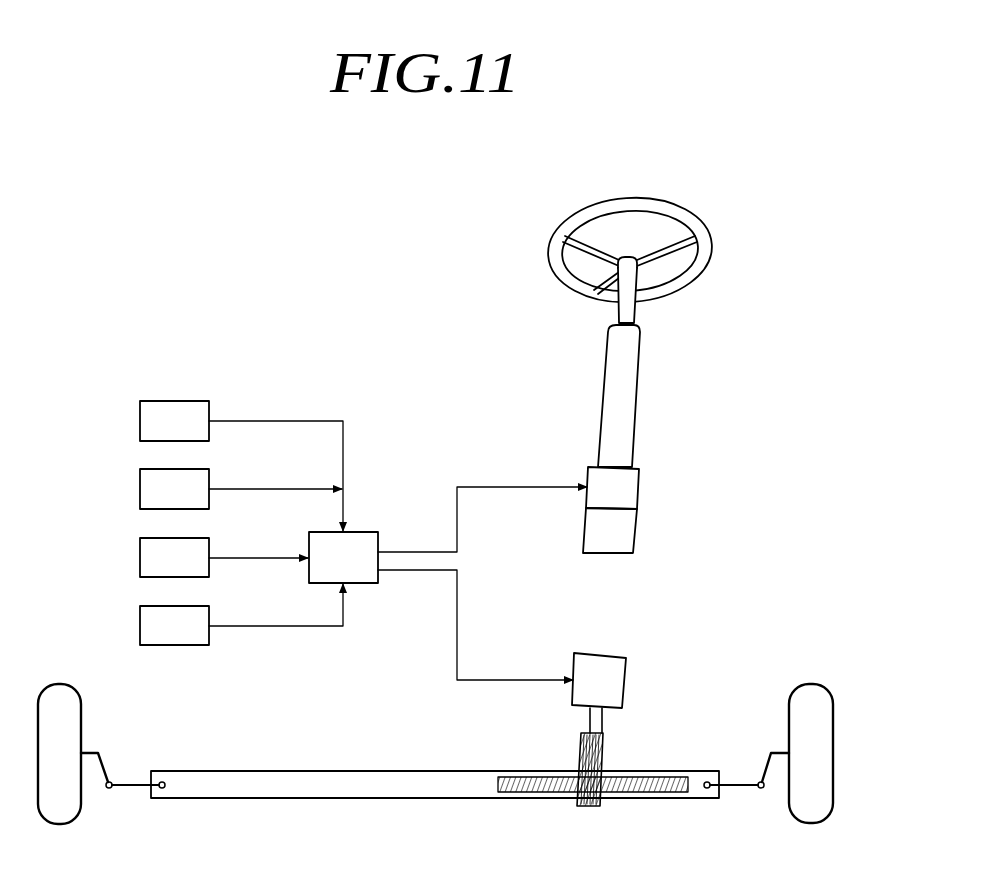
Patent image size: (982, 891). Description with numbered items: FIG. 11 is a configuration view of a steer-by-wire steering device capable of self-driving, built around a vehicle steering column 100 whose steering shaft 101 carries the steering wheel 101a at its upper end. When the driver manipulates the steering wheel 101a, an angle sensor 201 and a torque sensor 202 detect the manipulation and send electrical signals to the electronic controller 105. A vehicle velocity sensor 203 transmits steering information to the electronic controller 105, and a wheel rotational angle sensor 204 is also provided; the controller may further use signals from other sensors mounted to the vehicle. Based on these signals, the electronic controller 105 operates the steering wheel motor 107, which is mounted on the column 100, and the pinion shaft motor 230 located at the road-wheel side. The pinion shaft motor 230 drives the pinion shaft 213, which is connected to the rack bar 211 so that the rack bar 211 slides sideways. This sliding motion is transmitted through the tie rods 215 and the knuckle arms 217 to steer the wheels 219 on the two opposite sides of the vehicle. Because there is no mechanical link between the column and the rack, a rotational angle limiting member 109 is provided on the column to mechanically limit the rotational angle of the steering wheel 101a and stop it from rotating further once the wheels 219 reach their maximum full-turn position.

The steering column assembly 100 is at (670, 392).
The steering shaft 101 is at (625, 272).
The steering wheel 101a is at (630, 205).
The electronic controller 105 is at (364, 531).
The steering wheel motor 107 is at (628, 489).
The rotational angle limiting member 109 is at (628, 529).
The angle sensor 201 is at (140, 421).
The torque sensor 202 is at (140, 489).
The vehicle velocity sensor 203 is at (140, 558).
The wheel rotational angle sensor 204 is at (140, 626).
The rack bar 211 is at (353, 790).
The pinion shaft 213 is at (601, 748).
The tie rod 215 is at (122, 790).
The knuckle arm 217 is at (106, 769).
The wheel 219 is at (78, 710).
The pinion shaft motor 230 is at (618, 680).